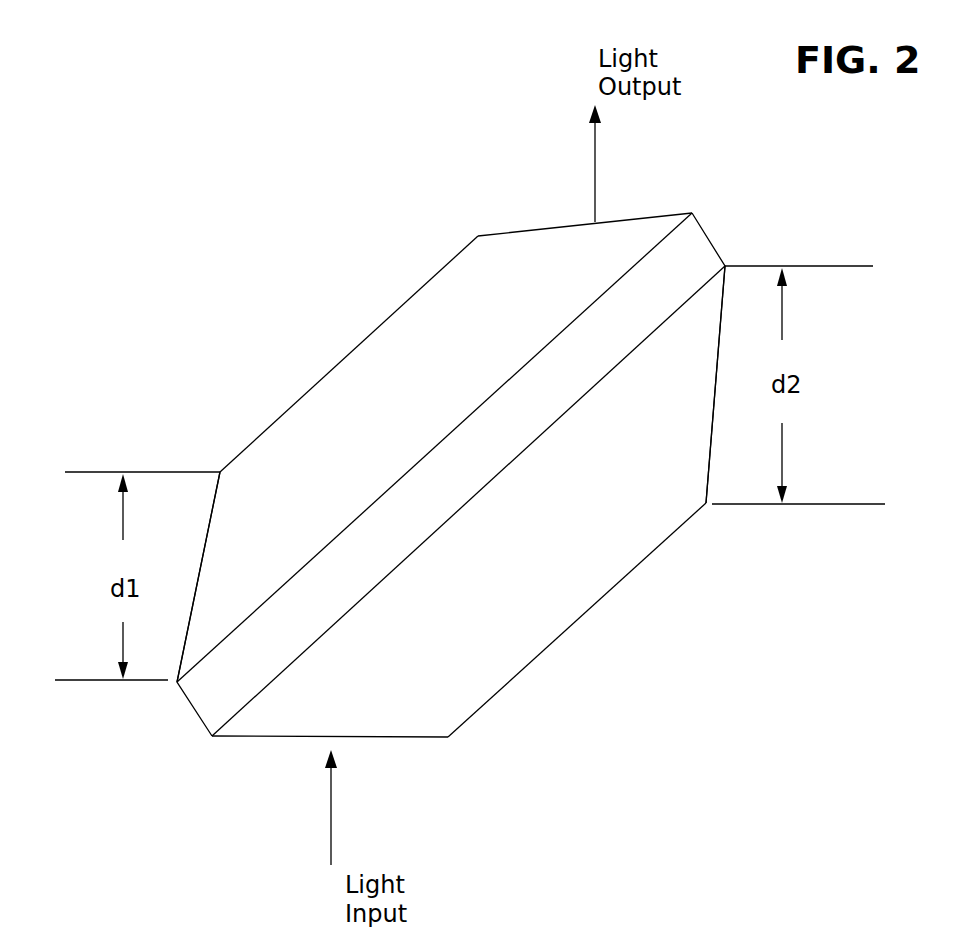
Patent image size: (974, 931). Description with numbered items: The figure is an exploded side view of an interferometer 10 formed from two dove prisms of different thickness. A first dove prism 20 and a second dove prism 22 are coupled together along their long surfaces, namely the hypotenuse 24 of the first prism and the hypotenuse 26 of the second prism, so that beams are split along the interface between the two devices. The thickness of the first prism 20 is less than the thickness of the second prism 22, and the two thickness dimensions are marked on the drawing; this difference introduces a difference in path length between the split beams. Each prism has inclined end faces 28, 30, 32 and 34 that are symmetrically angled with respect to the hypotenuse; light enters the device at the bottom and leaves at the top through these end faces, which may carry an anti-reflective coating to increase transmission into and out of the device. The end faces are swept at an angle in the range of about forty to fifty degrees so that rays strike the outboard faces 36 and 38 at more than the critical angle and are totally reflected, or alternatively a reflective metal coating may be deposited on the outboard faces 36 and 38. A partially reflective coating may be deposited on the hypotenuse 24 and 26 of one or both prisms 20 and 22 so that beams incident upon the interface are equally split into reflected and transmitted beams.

The light guide / optical element 10 is at (320, 238).
The dove prism 20 is at (285, 485).
The dove prism 22 is at (650, 480).
The hypotenuse 24 is at (500, 387).
The hypotenuse 26 is at (515, 467).
The inclined end face 28 is at (573, 228).
The inclined end face 30 is at (205, 528).
The inclined end face 32 is at (710, 442).
The inclined end face 34 is at (380, 740).
The outboard face 36 is at (330, 370).
The outboard face 38 is at (568, 633).